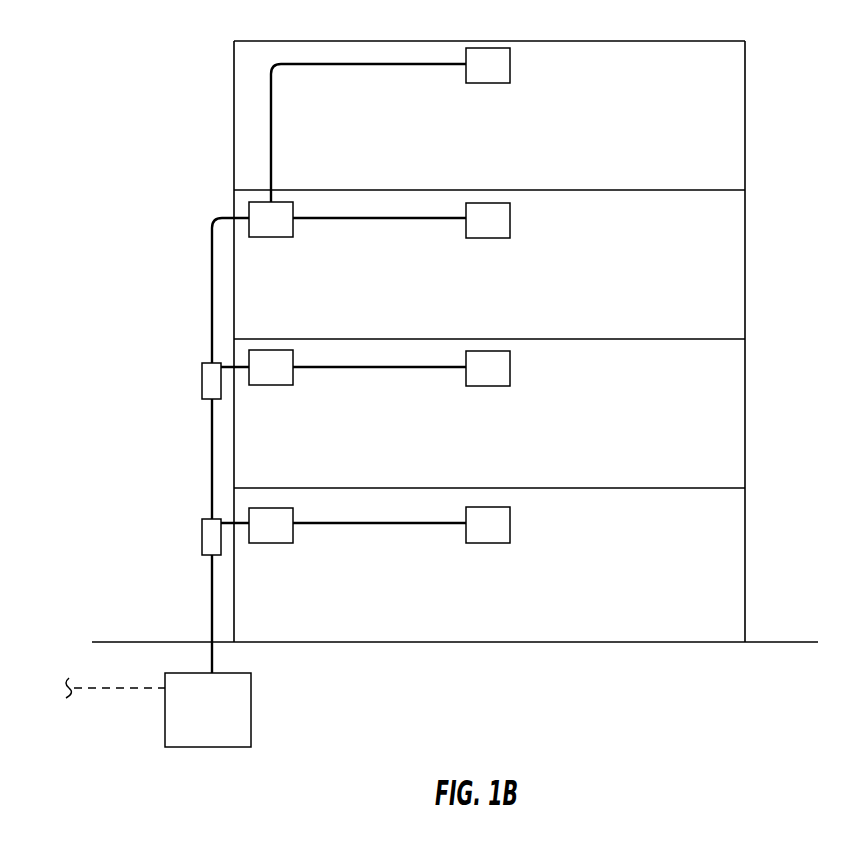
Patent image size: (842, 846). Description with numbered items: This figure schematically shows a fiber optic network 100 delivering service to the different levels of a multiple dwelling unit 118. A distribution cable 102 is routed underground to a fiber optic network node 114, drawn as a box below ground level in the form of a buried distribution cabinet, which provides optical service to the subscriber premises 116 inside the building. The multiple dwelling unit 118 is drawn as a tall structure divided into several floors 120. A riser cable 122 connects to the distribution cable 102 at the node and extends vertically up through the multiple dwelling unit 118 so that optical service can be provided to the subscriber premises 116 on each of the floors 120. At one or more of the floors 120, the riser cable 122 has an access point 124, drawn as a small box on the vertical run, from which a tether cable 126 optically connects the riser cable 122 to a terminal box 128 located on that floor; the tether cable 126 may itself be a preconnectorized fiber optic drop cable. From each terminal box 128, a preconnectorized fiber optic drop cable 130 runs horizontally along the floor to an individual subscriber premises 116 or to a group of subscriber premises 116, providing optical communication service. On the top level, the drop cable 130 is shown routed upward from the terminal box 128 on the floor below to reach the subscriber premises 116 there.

The fiber optic network 100 is at (197, 67).
The distribution cable 102 is at (118, 690).
The fiber optic network node 114 is at (213, 747).
The subscriber premises 116 is at (510, 68).
The multiple dwelling unit 118 is at (370, 41).
The floors 120 is at (233, 165).
The riser cable 122 is at (210, 258).
The access point 124 is at (202, 385).
The tether cable 126 is at (227, 367).
The terminal box 128 is at (249, 210).
The preconnectorized fiber optic drop cable 130 is at (330, 64).